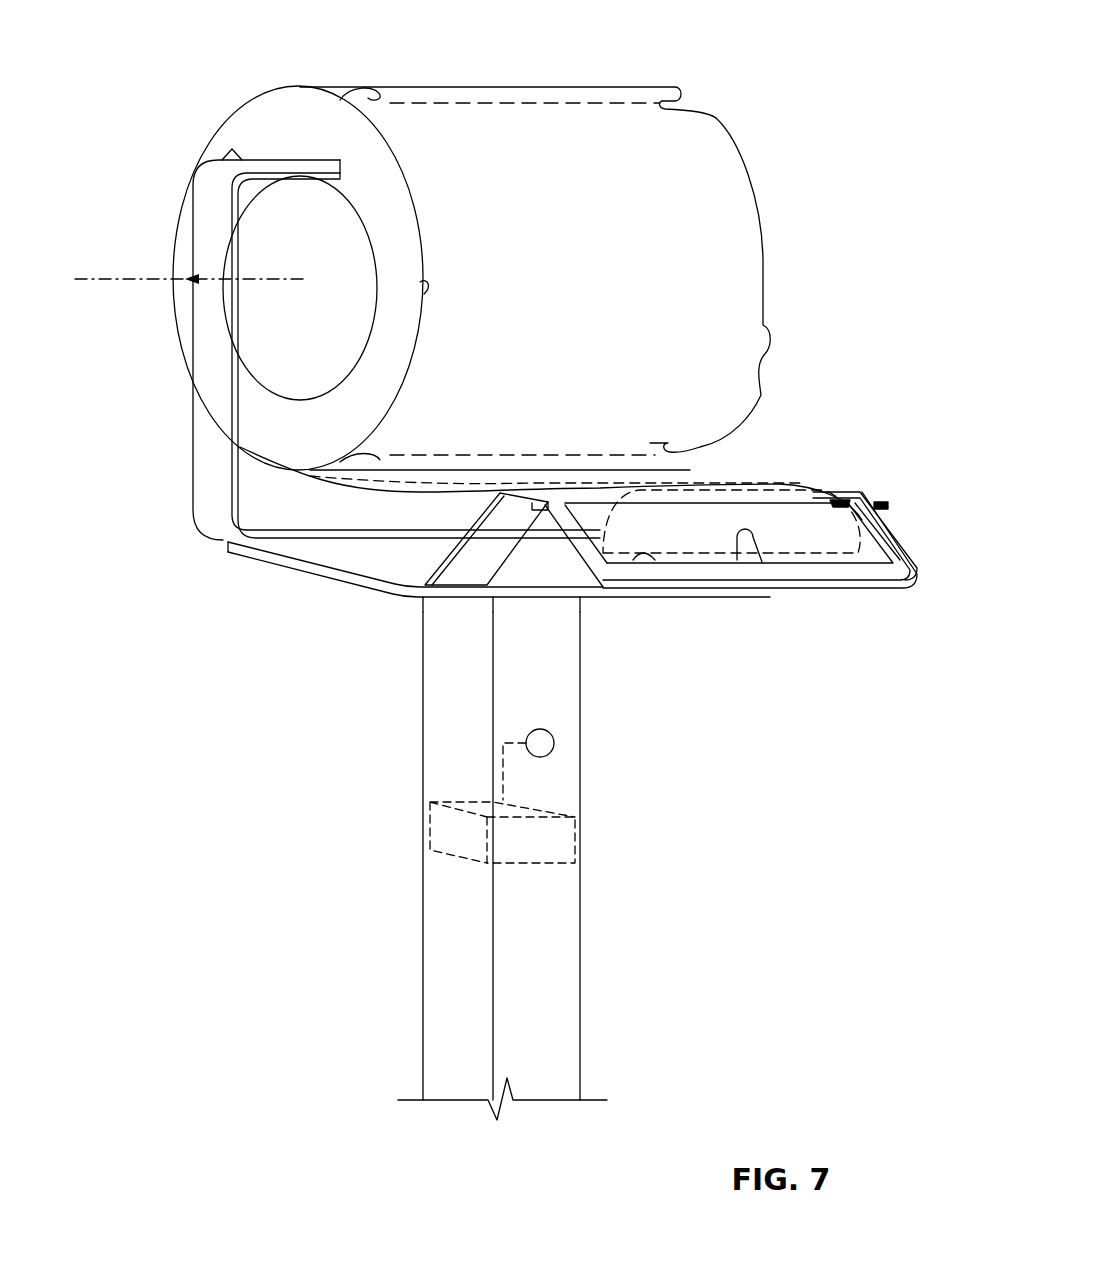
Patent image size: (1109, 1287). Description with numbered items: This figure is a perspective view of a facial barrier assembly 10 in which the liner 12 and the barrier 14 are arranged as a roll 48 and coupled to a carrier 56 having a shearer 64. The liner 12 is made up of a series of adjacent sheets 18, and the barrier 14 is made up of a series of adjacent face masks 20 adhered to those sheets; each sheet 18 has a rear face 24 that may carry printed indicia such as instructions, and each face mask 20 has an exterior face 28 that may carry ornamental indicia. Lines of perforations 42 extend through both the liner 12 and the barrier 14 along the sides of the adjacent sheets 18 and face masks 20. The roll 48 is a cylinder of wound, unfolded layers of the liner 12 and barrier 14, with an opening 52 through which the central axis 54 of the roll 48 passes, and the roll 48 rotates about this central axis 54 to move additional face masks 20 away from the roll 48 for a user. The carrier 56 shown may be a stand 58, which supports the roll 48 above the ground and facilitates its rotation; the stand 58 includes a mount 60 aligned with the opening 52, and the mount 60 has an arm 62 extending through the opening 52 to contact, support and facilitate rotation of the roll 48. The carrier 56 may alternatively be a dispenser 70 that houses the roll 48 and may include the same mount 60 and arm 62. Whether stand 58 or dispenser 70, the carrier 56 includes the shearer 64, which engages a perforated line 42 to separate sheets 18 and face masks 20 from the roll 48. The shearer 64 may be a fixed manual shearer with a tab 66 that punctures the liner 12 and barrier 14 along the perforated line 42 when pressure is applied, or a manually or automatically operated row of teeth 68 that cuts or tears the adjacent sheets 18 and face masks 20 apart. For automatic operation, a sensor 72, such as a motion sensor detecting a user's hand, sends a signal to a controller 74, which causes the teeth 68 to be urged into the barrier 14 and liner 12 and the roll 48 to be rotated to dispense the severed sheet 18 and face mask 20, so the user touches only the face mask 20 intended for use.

The facial barrier assembly 10 is at (762, 14).
The liner 12 is at (700, 280).
The barrier 14 is at (742, 507).
The sheet 18 is at (700, 215).
The face mask 20 is at (782, 510).
The rear face 24 is at (700, 135).
The exterior face 28 is at (823, 538).
The line of perforations 42 is at (560, 103).
The roll 48 is at (275, 107).
The opening 52 is at (298, 323).
The central axis 54 is at (103, 282).
The carrier 56 is at (315, 570).
The stand 58 is at (398, 600).
The mount 60 is at (273, 177).
The arm 62 is at (325, 182).
The shearer 64 is at (790, 605).
The tab 66 is at (735, 556).
The row of teeth 68 is at (855, 572).
The dispenser 70 is at (193, 578).
The sensor 72 is at (555, 743).
The controller 74 is at (563, 865).